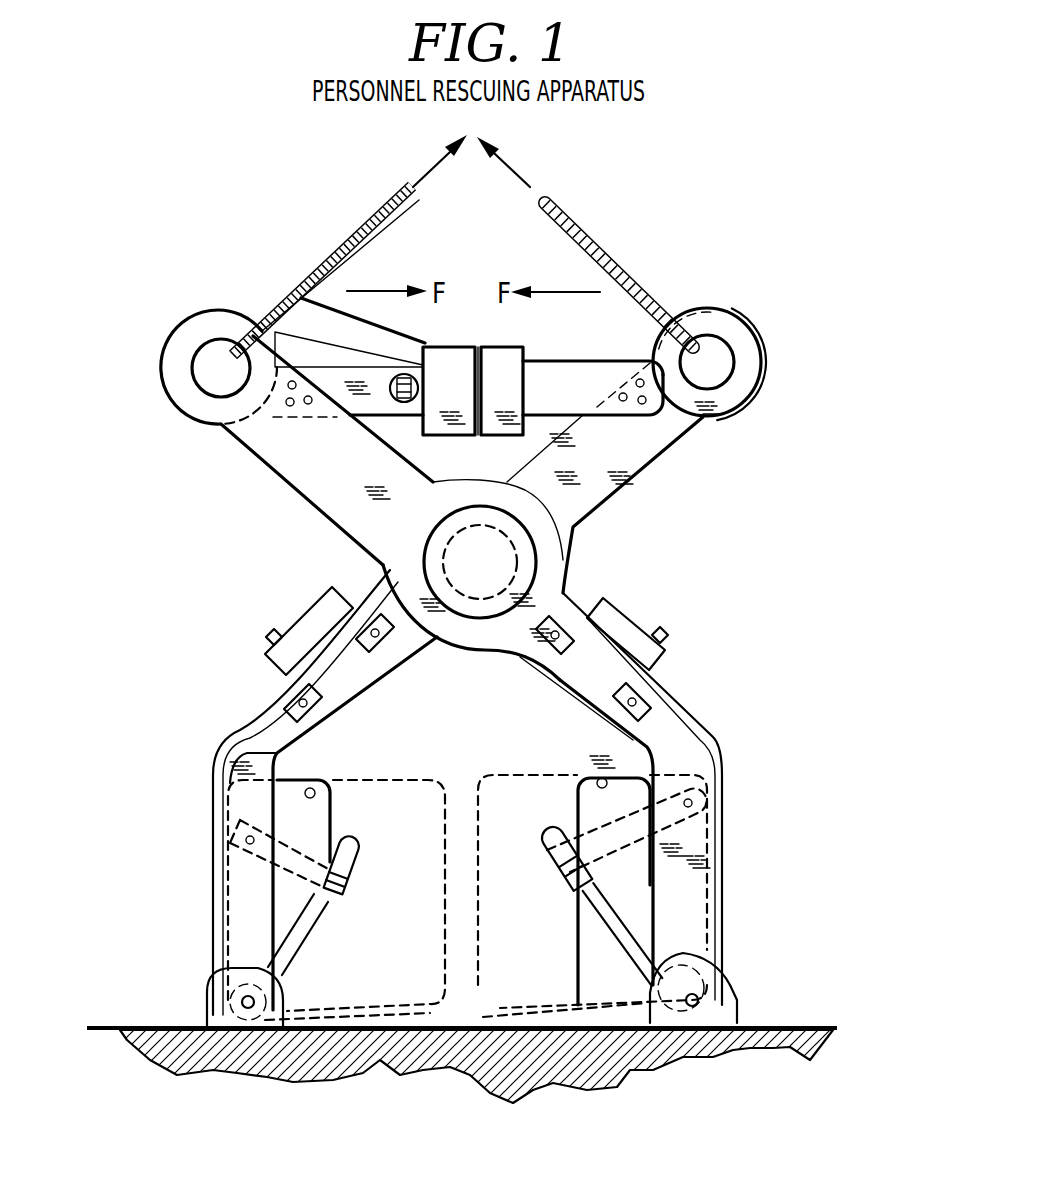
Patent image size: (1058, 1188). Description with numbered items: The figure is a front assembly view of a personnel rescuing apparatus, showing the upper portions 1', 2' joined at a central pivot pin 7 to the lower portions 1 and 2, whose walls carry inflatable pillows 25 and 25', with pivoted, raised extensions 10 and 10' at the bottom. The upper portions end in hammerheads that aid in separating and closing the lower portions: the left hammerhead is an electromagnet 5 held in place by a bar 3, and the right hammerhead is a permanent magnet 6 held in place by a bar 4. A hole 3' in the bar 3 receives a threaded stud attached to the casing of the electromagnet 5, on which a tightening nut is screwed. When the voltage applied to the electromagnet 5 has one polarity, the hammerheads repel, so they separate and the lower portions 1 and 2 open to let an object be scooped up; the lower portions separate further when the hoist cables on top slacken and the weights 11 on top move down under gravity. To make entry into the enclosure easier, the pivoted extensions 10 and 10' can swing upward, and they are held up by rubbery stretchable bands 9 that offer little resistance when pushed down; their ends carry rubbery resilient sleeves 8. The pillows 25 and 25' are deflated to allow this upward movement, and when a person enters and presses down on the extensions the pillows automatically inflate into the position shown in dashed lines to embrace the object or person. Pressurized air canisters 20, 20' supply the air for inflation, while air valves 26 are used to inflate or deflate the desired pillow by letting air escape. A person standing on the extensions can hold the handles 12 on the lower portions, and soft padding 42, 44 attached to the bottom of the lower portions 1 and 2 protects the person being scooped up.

The lower portion 1 is at (309, 792).
The upper right frame arm 1' is at (634, 450).
The lower portion 2 is at (653, 799).
The upper left frame arm 2' is at (297, 382).
The bar 3 is at (468, 416).
The hole in bar 3' is at (375, 363).
The bar 4 is at (590, 362).
The electromagnet 5 is at (423, 345).
The permanent magnet 6 is at (537, 373).
The central pivot hub 7 is at (400, 546).
The rubbery resilient sleeve 8 is at (352, 847).
The rubbery stretchable band 9 is at (318, 671).
The pivoted extension 10 is at (237, 881).
The pivoted extension 10' is at (600, 934).
The weight 11 is at (763, 393).
The handle 12 is at (353, 673).
The pressurized air canister 20 is at (465, 610).
The pad nubs 20' is at (483, 614).
The inflatable pillow 25 is at (331, 793).
The inflatable pillow 25' is at (599, 857).
The air valve 26 is at (337, 780).
The left ground roller 42 is at (150, 1023).
The soft padding 44 is at (733, 1000).